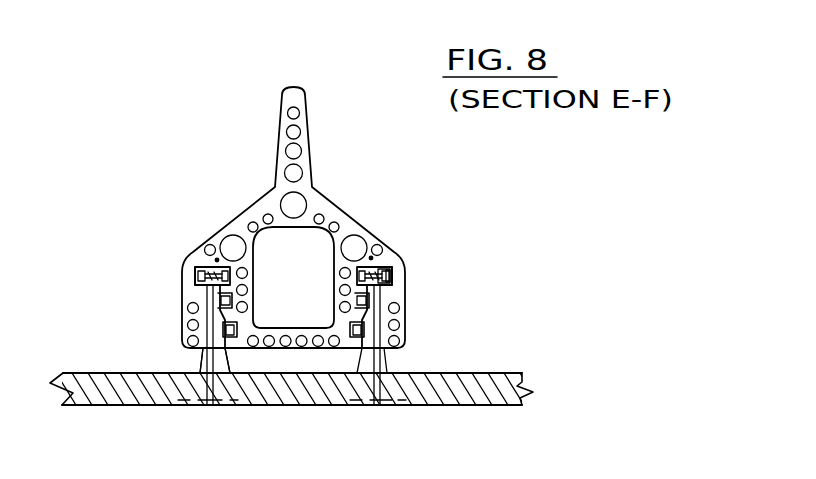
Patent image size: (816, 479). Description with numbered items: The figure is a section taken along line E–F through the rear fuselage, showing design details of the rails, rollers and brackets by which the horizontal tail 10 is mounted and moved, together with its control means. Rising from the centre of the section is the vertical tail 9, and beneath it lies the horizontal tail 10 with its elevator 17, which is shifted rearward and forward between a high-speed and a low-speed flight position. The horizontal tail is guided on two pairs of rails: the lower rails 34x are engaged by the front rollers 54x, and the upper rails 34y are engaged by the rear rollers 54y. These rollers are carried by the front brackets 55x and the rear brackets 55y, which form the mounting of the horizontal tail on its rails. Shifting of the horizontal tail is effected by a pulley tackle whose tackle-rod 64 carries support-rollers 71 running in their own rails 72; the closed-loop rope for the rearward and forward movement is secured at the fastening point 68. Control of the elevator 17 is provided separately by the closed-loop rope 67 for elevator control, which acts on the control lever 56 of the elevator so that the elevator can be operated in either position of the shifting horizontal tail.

The vertical tail 9 is at (302, 162).
The horizontal tail 10 is at (330, 397).
The elevator 17 is at (130, 388).
The lower rails 34x is at (352, 327).
The upper rails 34y is at (356, 298).
The front rollers 54x is at (362, 327).
The rear rollers 54y is at (219, 298).
The front brackets 55x is at (366, 363).
The rear brackets 55y is at (204, 358).
The control lever of elevator 56 is at (222, 367).
The tackle-rod of the pulley tackle 64 is at (203, 267).
The closed-loop rope for elevator control 67 is at (207, 265).
The fastening point of rope 68 is at (379, 266).
The support-rollers on tackle-rod 71 is at (390, 276).
The rails for support-rollers 72 is at (371, 258).